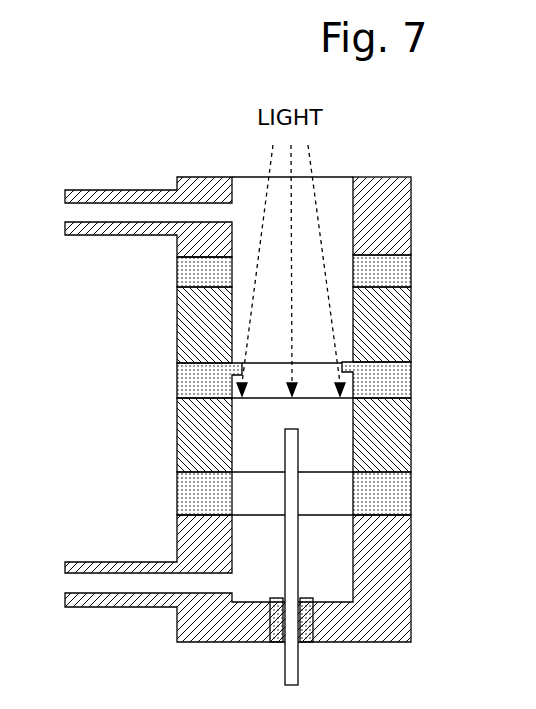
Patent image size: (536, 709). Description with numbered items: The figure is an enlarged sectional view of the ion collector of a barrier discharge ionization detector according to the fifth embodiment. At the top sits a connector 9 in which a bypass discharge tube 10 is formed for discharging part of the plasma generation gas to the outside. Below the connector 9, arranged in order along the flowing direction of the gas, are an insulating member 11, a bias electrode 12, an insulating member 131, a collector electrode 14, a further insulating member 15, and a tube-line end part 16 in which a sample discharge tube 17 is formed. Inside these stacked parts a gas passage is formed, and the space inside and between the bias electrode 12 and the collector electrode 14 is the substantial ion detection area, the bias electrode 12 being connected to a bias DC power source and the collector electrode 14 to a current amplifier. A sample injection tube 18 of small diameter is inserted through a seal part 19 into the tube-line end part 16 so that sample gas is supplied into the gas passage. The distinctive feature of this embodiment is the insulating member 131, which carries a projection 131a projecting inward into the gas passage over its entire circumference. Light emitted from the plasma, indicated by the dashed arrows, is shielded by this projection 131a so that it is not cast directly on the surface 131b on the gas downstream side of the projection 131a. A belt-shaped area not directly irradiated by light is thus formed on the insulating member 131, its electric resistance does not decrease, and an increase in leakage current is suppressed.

The connector 9 is at (412, 192).
The bypass discharge tube 10 is at (105, 188).
The insulating member 11 is at (178, 275).
The bias electrode 12 is at (412, 309).
The insulating member 131 is at (180, 380).
The projection 131a is at (348, 364).
The surface 131b is at (350, 380).
The collector electrode 14 is at (408, 432).
The insulating member 15 is at (185, 490).
The tube-line end part 16 is at (370, 643).
The sample discharge tube 17 is at (110, 607).
The sample injection tube 18 is at (298, 552).
The seal part 19 is at (262, 646).